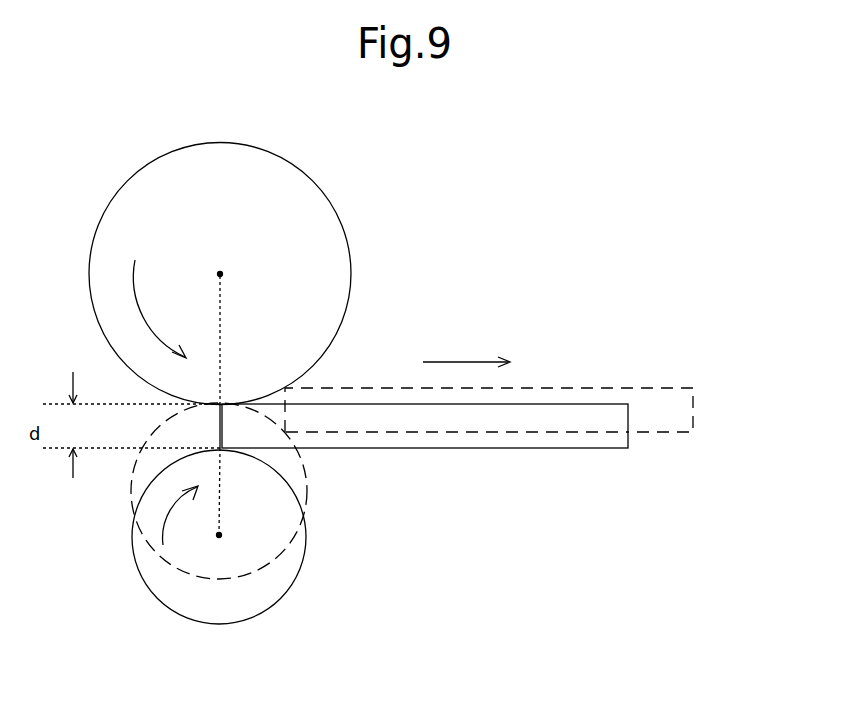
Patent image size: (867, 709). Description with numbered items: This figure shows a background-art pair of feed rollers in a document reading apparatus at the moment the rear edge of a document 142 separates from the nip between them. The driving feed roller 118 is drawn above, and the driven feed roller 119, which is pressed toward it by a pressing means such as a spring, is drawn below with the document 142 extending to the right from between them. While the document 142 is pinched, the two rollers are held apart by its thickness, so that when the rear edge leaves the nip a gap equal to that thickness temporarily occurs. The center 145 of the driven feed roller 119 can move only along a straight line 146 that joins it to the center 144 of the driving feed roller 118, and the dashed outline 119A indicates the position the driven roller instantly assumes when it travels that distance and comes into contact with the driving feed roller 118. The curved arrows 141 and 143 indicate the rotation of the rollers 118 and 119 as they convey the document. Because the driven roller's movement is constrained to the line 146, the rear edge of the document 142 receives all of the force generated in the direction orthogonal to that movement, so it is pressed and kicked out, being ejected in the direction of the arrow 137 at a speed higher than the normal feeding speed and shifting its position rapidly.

The driving feed roller 118 is at (307, 173).
The driven feed roller 119 is at (271, 606).
The lower roller in contact position 119A is at (306, 487).
The arrow 137 is at (450, 362).
The rotation direction of upper roller 141 is at (137, 292).
The document 142 is at (557, 449).
The rotation direction of lower roller 143 is at (175, 565).
The center of the driving feed roller 144 is at (223, 274).
The center of the driven feed roller 145 is at (222, 535).
The straight line 146 is at (222, 334).